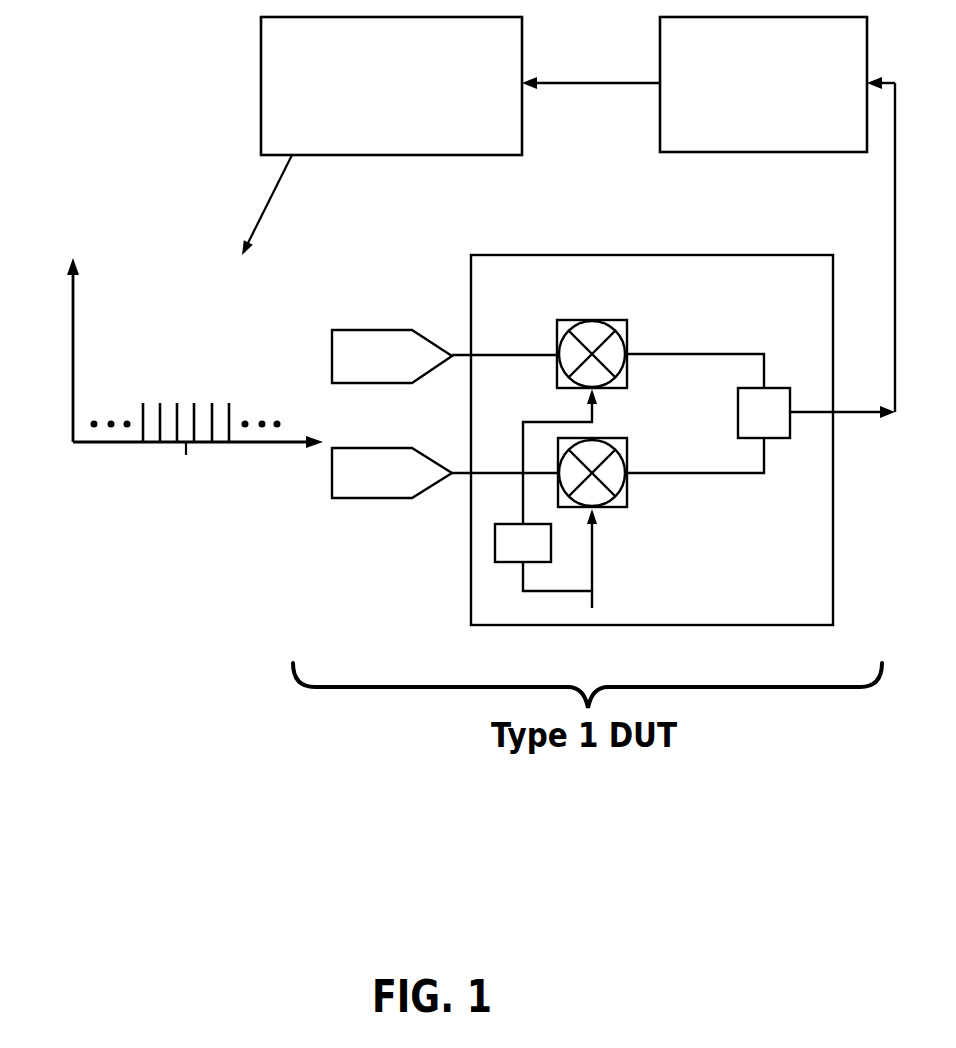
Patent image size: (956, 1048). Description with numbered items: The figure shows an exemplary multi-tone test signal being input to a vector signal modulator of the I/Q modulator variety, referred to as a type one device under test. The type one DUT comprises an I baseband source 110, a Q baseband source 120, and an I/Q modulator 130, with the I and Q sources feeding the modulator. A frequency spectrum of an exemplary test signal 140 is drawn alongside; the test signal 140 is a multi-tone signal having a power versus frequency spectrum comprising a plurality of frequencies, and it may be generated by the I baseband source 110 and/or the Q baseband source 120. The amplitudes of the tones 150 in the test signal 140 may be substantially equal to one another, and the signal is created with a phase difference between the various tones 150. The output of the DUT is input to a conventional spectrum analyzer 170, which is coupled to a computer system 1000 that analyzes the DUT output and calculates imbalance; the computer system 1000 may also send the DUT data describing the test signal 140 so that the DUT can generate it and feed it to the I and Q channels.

The computer system 1000 is at (364, 97).
The spectrum analyzer 170 is at (741, 96).
The I/Q modulator 130 is at (774, 580).
The I baseband source 110 is at (386, 368).
The Q baseband source 120 is at (391, 486).
The test signal 140 is at (194, 332).
The tones 150 is at (141, 411).